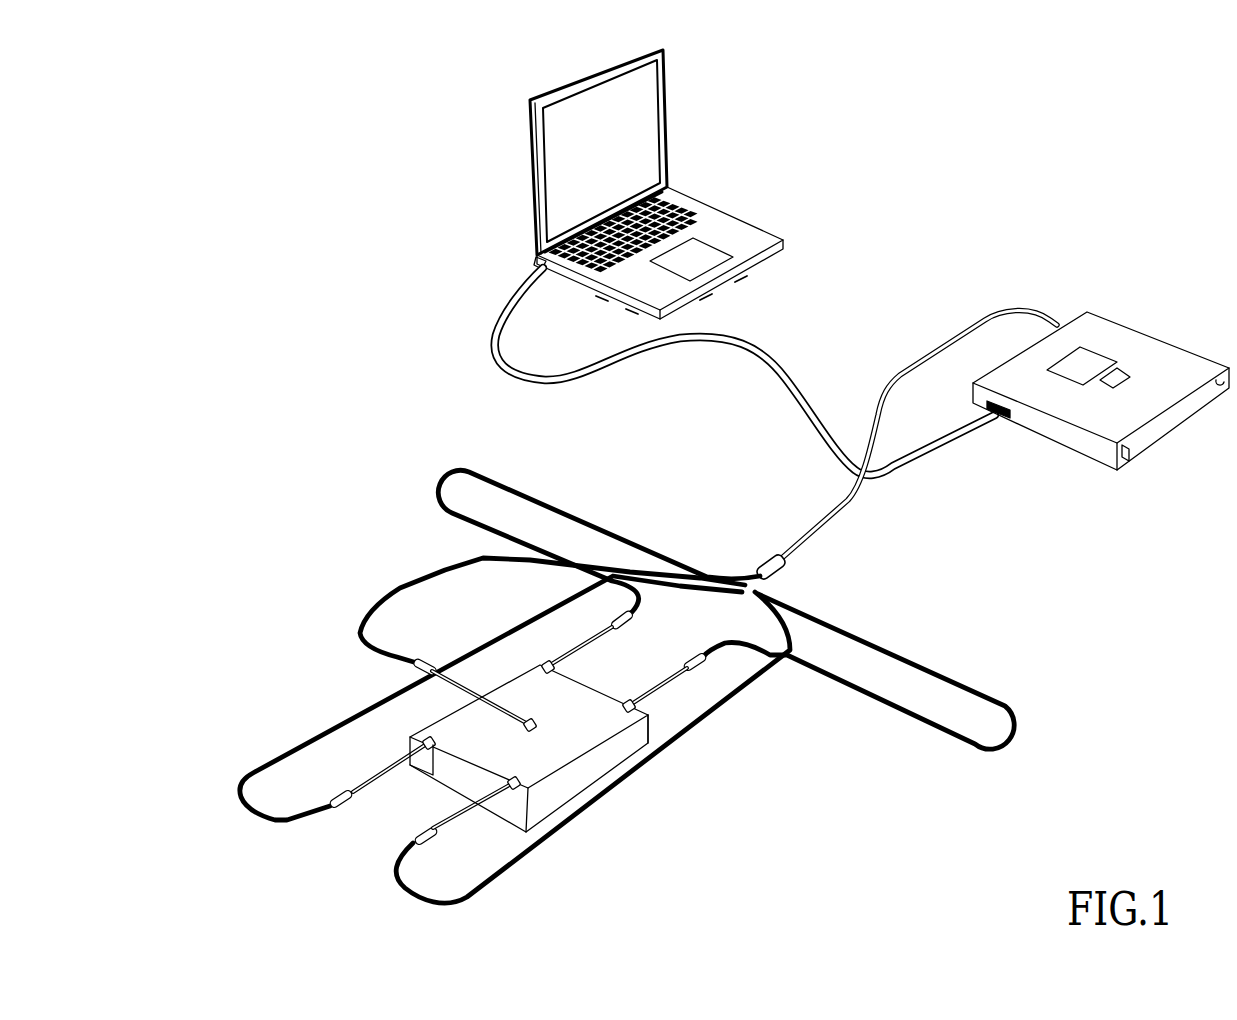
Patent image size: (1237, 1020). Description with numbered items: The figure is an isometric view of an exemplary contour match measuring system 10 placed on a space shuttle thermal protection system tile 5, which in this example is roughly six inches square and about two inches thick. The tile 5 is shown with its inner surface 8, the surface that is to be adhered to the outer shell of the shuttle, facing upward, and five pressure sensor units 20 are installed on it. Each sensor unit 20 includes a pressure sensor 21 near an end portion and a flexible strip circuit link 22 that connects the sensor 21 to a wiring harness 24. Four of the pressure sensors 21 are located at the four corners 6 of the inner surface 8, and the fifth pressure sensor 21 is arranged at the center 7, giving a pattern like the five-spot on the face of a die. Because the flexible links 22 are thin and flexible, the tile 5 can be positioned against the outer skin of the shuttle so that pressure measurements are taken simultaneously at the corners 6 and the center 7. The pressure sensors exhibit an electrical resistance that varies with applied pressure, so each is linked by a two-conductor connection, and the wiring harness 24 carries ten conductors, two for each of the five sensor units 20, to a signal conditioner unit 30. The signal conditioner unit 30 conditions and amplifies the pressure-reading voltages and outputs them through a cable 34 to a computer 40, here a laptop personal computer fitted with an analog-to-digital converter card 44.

The contour match measuring system 10 is at (350, 214).
The computer 40 is at (666, 163).
The analog-to-digital converter card 44 is at (537, 270).
The cable 34 is at (790, 367).
The signal conditioner unit 30 is at (1118, 328).
The wiring harness 24 is at (843, 515).
The flexible strip circuit link 22 is at (426, 658).
The pressure sensor 21 is at (476, 659).
The pressure sensor unit 20 is at (558, 639).
The inner surface 8 is at (556, 747).
The center 7 is at (655, 736).
The corners 6 is at (566, 665).
The thermal protection system tile 5 is at (433, 815).